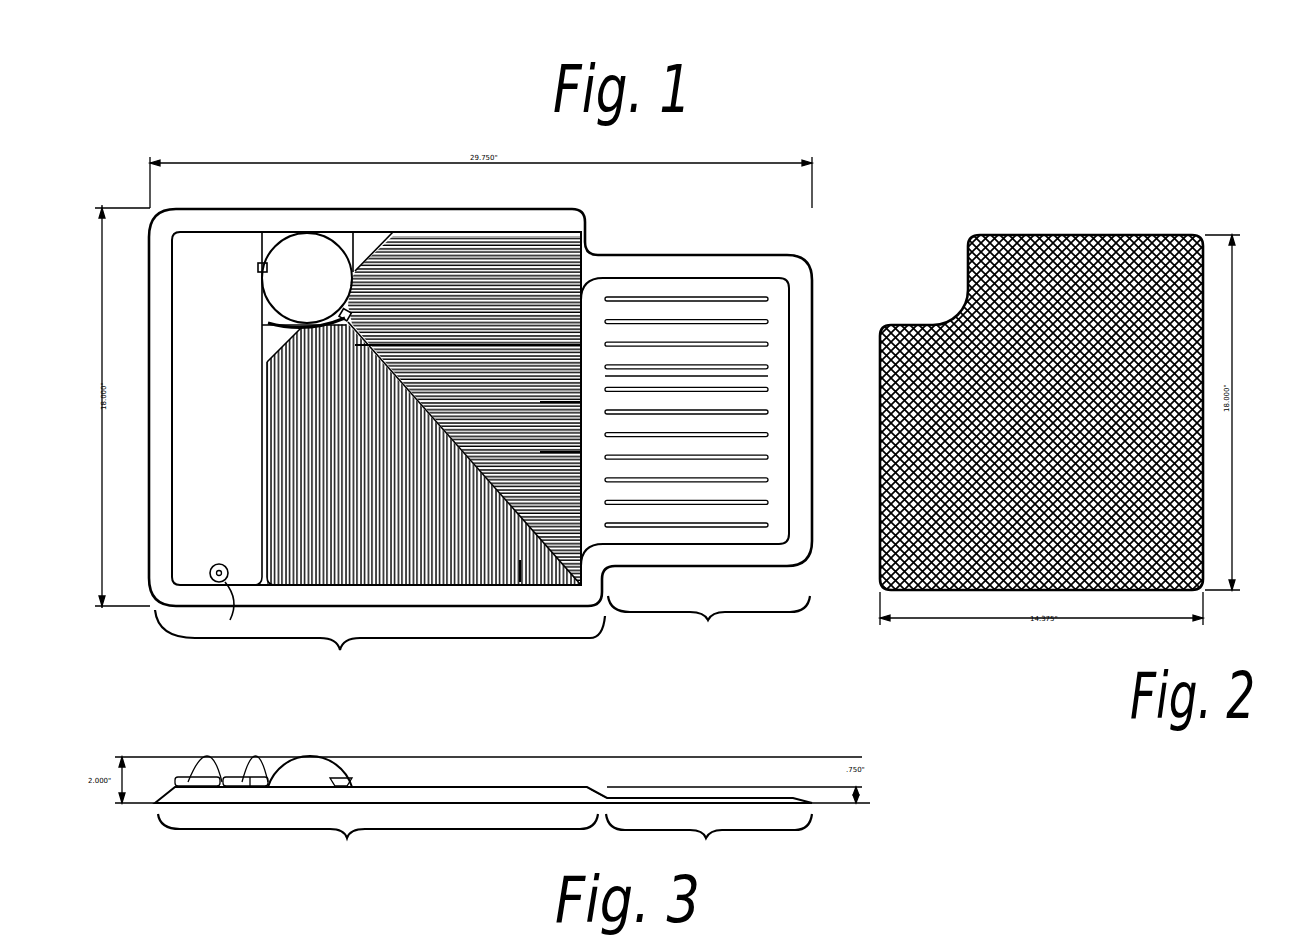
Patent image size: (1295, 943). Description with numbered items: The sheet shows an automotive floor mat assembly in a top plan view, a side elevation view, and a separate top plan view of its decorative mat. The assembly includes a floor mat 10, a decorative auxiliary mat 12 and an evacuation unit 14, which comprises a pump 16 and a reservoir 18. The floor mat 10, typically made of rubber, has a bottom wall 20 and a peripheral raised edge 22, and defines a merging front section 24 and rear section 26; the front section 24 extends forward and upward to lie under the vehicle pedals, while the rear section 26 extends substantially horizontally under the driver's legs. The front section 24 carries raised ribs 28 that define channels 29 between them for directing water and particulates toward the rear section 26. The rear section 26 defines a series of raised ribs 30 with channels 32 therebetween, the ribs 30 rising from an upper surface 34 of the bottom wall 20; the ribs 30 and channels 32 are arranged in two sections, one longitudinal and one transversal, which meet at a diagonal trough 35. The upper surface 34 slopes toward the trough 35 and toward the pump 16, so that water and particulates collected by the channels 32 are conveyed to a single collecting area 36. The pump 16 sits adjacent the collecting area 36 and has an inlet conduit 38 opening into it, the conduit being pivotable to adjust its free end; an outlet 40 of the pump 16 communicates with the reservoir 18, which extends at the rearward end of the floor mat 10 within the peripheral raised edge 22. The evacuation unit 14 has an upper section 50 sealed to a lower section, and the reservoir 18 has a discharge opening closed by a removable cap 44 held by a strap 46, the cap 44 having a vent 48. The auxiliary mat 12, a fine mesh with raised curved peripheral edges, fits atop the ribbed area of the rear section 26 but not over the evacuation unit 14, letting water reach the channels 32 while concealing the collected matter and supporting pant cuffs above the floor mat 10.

In FIG. 1, the floor mat 10 is at (480, 339).
In FIG. 3, the floor mat 10 is at (483, 749).
In FIG. 2, the decorative auxiliary mat 12 is at (1073, 354).
In FIG. 1, the evacuation unit 14 is at (292, 207).
In FIG. 3, the evacuation unit 14 is at (298, 736).
In FIG. 1, the pump 16 is at (307, 278).
In FIG. 3, the pump 16 is at (334, 750).
In FIG. 1, the reservoir 18 is at (228, 408).
In FIG. 3, the reservoir 18 is at (214, 770).
In FIG. 1, the bottom wall 20 is at (517, 234).
In FIG. 1, the peripheral raised edge 22 is at (685, 374).
In FIG. 3, the peripheral raised edge 22 is at (631, 759).
In FIG. 1, the front section 24 is at (709, 632).
In FIG. 3, the front section 24 is at (709, 842).
In FIG. 1, the rear section 26 is at (380, 532).
In FIG. 3, the rear section 26 is at (378, 846).
In FIG. 1, the raised ribs 28 is at (736, 326).
In FIG. 1, the channels 29 is at (758, 375).
In FIG. 1, the raised ribs 30 is at (403, 382).
In FIG. 1, the channels 32 is at (641, 524).
In FIG. 1, the upper surface 34 is at (578, 285).
In FIG. 1, the diagonal trough 35 is at (464, 376).
In FIG. 1, the collecting area 36 is at (343, 263).
In FIG. 1, the inlet conduit 38 is at (268, 306).
In FIG. 3, the inlet conduit 38 is at (386, 765).
In FIG. 1, the outlet 40 is at (202, 180).
In FIG. 3, the outlet 40 is at (222, 851).
In FIG. 1, the removable cap 44 is at (169, 548).
In FIG. 3, the removable cap 44 is at (166, 829).
In FIG. 1, the strap 46 is at (152, 646).
In FIG. 3, the strap 46 is at (216, 831).
In FIG. 1, the vent 48 is at (193, 644).
In FIG. 1, the upper section 50 is at (314, 408).
In FIG. 3, the upper section 50 is at (381, 727).